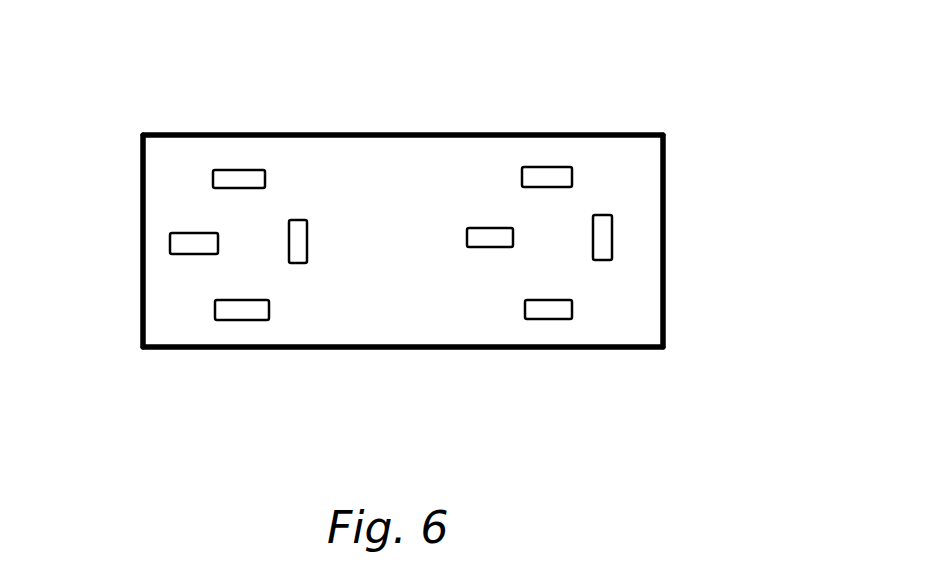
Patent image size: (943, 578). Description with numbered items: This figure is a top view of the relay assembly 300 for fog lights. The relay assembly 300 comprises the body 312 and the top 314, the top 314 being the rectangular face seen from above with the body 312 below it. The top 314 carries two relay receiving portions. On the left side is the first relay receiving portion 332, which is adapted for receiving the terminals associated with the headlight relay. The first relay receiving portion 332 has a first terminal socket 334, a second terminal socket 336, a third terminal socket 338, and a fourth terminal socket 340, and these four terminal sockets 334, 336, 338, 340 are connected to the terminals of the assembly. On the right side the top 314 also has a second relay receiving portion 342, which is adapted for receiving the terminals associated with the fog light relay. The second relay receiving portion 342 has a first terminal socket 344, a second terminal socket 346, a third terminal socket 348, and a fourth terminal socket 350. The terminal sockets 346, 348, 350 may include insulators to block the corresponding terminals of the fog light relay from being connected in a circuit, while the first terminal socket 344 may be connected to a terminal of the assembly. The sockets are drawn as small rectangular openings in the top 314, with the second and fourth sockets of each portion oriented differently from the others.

The relay assembly 300 is at (702, 143).
The body 312 is at (663, 327).
The top 314 is at (435, 162).
The first relay receiving portion 332 is at (183, 310).
The first terminal socket 334 is at (240, 170).
The second terminal socket 336 is at (307, 237).
The third terminal socket 338 is at (269, 310).
The fourth terminal socket 340 is at (170, 243).
The second relay receiving portion 342 is at (498, 298).
The first terminal socket 344 is at (547, 167).
The second terminal socket 346 is at (612, 242).
The third terminal socket 348 is at (557, 320).
The fourth terminal socket 350 is at (467, 240).